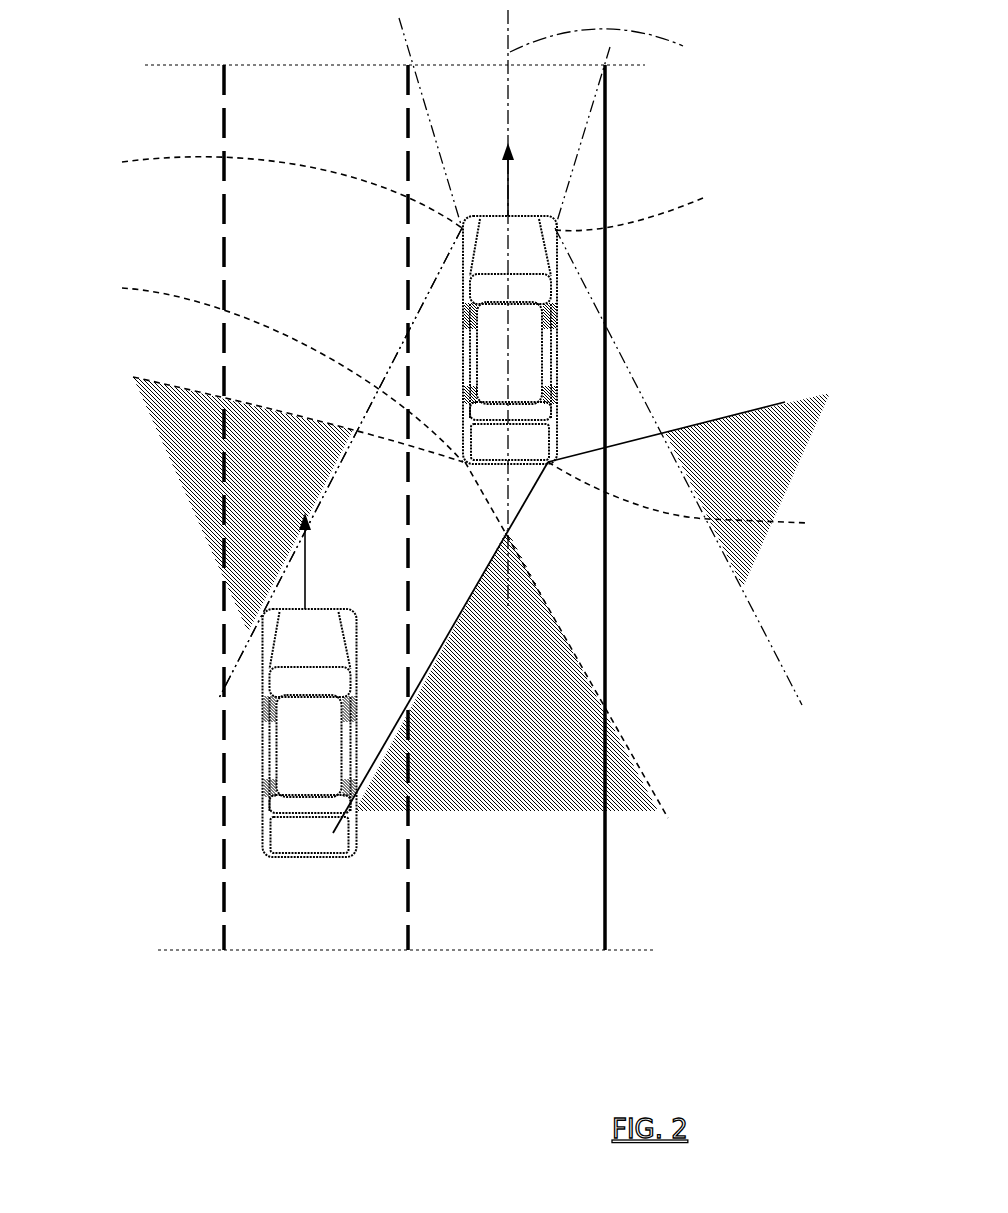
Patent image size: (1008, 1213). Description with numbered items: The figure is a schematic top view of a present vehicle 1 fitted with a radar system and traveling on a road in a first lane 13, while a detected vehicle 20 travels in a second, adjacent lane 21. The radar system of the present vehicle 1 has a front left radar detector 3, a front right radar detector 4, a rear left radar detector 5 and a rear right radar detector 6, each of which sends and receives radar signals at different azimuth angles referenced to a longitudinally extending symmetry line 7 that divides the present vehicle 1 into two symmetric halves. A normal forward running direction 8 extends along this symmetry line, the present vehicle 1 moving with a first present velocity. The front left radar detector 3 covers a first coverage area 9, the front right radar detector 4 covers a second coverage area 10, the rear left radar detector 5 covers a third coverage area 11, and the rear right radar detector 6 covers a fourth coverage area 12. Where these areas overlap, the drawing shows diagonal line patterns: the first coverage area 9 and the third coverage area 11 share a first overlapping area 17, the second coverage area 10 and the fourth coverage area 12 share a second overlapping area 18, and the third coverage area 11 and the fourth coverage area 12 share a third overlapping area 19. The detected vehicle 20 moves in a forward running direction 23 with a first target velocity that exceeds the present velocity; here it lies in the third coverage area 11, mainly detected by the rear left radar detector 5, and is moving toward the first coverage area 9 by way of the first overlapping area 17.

The present vehicle 1 is at (528, 359).
The front left radar detector 3 is at (279, 123).
The front right radar detector 4 is at (641, 139).
The rear left radar detector 5 is at (280, 464).
The rear right radar detector 6 is at (483, 466).
The symmetry line 7 is at (605, 46).
The normal forward running direction 8 is at (508, 196).
The first coverage area 9 is at (316, 266).
The second coverage area 10 is at (652, 278).
The third coverage area 11 is at (370, 535).
The fourth coverage area 12 is at (627, 627).
The first lane 13 is at (502, 866).
The first overlapping area 17 is at (275, 465).
The second overlapping area 18 is at (710, 450).
The third overlapping area 19 is at (545, 718).
The detected vehicle 20 is at (315, 750).
The second lane 21 is at (312, 910).
The forward running direction 23 is at (305, 583).